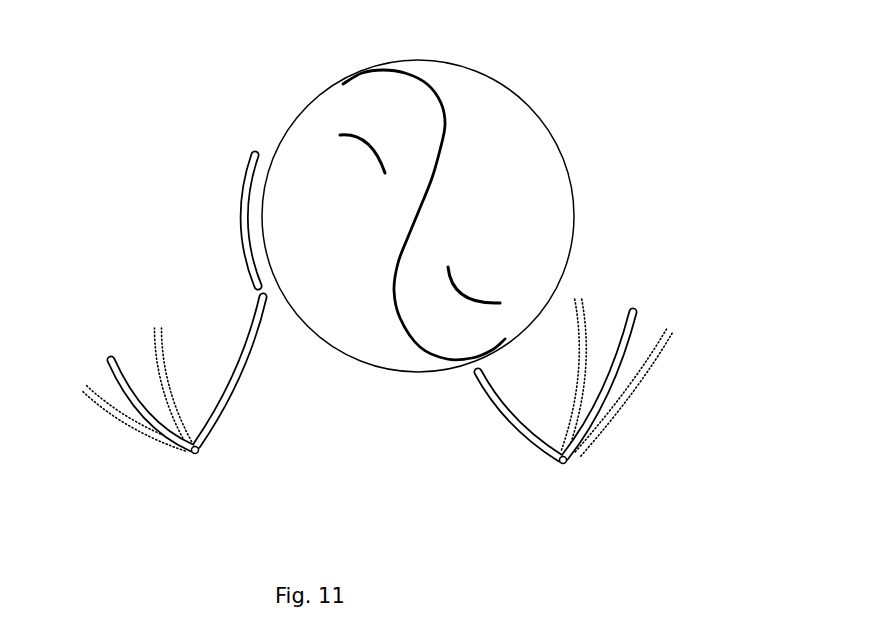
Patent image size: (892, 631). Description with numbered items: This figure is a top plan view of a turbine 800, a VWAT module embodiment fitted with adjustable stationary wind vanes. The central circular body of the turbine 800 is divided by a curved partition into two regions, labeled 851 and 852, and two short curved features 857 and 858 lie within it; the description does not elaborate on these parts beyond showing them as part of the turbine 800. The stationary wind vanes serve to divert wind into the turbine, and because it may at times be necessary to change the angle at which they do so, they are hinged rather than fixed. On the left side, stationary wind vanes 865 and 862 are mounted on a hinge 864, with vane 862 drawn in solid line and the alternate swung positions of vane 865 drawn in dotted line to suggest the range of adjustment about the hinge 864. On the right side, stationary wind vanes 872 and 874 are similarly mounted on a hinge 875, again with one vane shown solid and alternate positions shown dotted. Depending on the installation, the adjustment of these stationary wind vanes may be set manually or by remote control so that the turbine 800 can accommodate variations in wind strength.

The turbine 800 is at (652, 87).
The spherical body 851 is at (430, 343).
The curved partition 852 is at (447, 110).
The lower curved slot 857 is at (473, 287).
The upper curved slot 858 is at (328, 132).
The stationary wind vane 862 is at (232, 199).
The hinge 864 is at (201, 462).
The stationary wind vane 865 is at (126, 416).
The stationary wind vane 872 is at (498, 420).
The stationary wind vane 874 is at (637, 391).
The hinge 875 is at (562, 472).